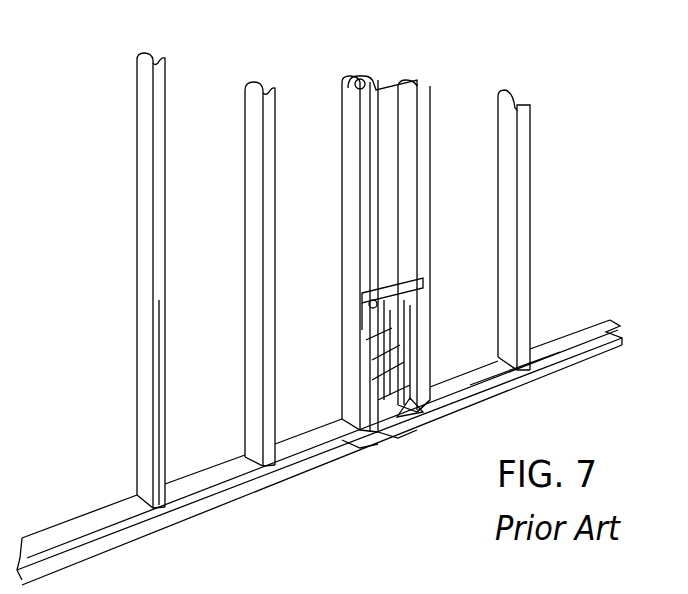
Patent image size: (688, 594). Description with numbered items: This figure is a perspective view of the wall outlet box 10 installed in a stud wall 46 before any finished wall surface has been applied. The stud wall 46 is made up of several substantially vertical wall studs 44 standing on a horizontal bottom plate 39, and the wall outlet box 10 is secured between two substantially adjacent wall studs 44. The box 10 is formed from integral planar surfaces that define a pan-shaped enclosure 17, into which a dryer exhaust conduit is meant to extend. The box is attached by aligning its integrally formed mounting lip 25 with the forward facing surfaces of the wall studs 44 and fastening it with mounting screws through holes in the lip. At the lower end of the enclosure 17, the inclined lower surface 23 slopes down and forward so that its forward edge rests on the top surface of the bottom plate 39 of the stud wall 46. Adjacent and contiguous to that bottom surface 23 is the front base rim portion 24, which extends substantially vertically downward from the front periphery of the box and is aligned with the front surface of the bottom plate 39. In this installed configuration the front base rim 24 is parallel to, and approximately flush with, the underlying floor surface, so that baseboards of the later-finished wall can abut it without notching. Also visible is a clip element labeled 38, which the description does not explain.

The wall outlet box 10 is at (388, 477).
The pan-shaped enclosure 17 is at (410, 373).
The inclined lower surface 23 is at (422, 414).
The front base rim portion 24 is at (390, 436).
The mounting lip 25 is at (345, 448).
The bracket 38 is at (396, 82).
The bottom plate 39 is at (509, 378).
The wall studs 44 is at (160, 87).
The stud wall 46 is at (120, 281).